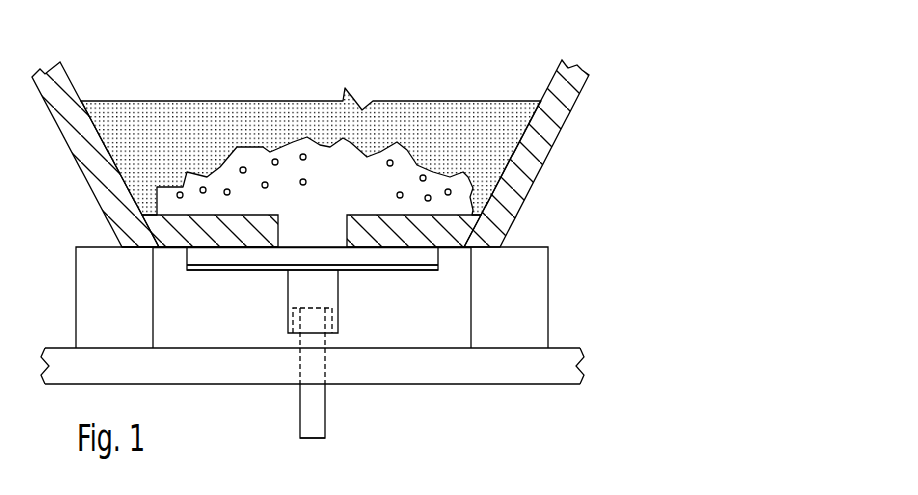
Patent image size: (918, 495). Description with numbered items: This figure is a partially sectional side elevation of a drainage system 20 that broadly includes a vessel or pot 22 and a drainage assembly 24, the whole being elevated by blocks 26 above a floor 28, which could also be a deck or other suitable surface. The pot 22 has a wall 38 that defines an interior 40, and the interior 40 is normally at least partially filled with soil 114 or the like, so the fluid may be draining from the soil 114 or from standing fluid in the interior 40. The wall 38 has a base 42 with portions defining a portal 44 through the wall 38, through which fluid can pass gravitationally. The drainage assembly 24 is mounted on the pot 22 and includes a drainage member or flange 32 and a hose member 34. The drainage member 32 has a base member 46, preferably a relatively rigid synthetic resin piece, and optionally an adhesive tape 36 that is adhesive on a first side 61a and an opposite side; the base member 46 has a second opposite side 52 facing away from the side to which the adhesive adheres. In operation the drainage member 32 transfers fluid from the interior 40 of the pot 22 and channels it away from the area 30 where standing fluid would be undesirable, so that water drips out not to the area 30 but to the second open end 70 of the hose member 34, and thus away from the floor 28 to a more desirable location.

The drainage system 20 is at (327, 153).
The vessel or pot 22 is at (565, 142).
The wall 38 is at (567, 98).
The interior 40 is at (159, 103).
The soil 114 is at (320, 185).
The portal 44 is at (279, 222).
The first side 61a is at (370, 245).
The base 42 is at (169, 240).
The blocks 26 is at (85, 302).
The drainage assembly 24 is at (380, 334).
The floor 28 is at (223, 370).
The adhesive tape 36 is at (438, 258).
The base member 46 is at (237, 272).
The second opposite side 52 is at (198, 279).
The drainage member or flange 32 is at (349, 290).
The area 30 is at (288, 337).
The hose member 34 is at (336, 414).
The second open end 70 is at (307, 440).